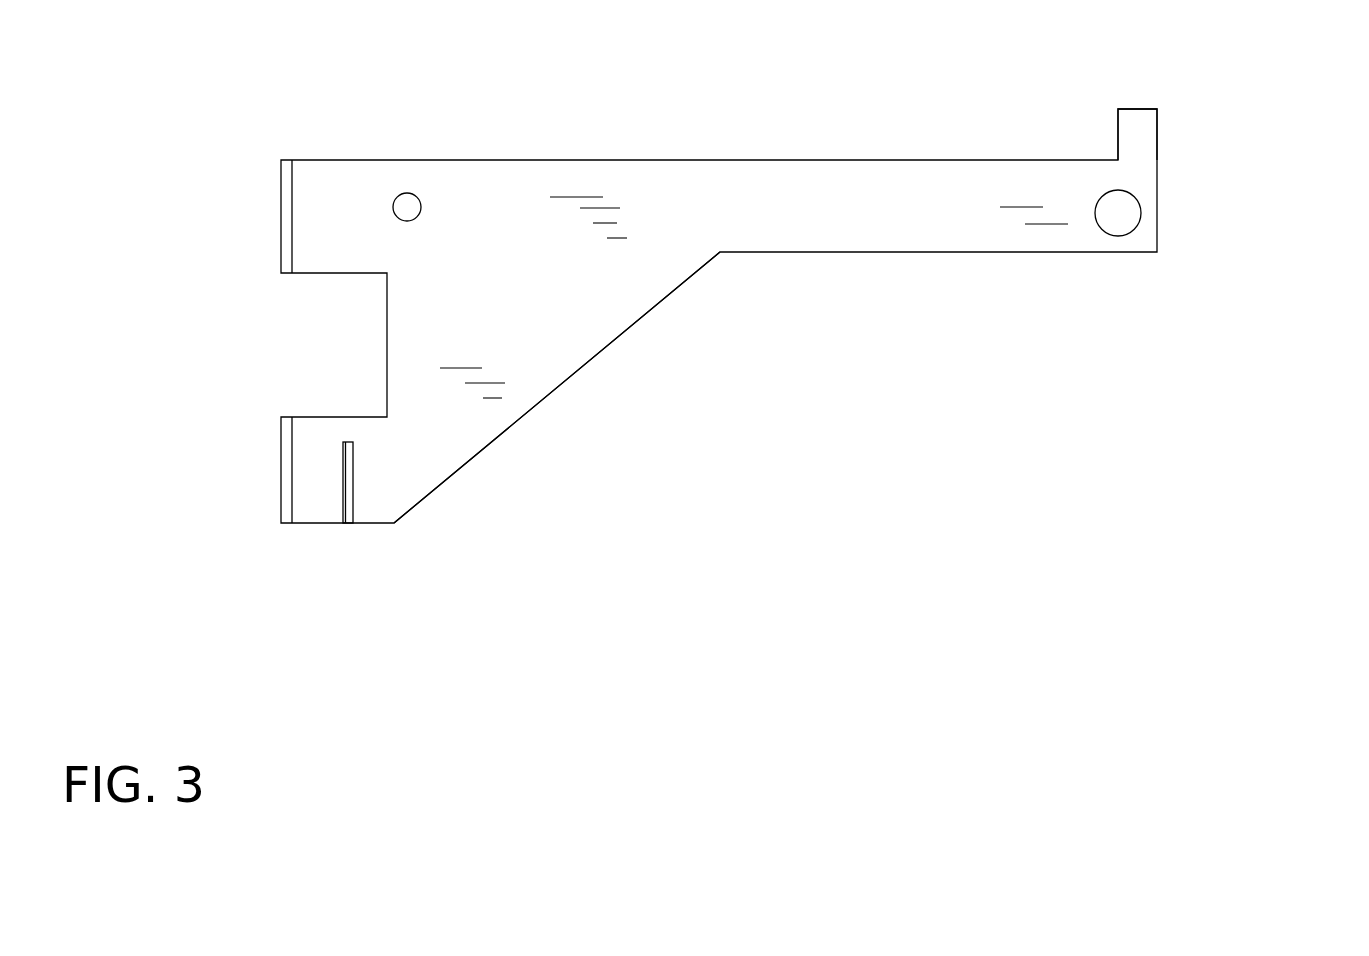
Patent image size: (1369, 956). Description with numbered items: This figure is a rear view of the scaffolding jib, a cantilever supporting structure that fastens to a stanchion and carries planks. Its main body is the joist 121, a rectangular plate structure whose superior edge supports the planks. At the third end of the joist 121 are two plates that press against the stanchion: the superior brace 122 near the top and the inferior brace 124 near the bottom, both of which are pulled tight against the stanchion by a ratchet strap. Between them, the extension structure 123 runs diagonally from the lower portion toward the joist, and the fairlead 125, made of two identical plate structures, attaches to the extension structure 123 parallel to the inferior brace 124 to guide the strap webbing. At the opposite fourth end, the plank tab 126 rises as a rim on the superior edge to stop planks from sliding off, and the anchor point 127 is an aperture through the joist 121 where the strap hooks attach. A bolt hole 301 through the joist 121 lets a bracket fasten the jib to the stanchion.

The joist 121 is at (834, 187).
The superior brace 122 is at (283, 213).
The extension structure 123 is at (420, 458).
The inferior brace 124 is at (283, 468).
The fairlead 125 is at (352, 477).
The plank tab 126 is at (1140, 133).
The anchor point 127 is at (1128, 214).
The bolt hole 301 is at (407, 198).